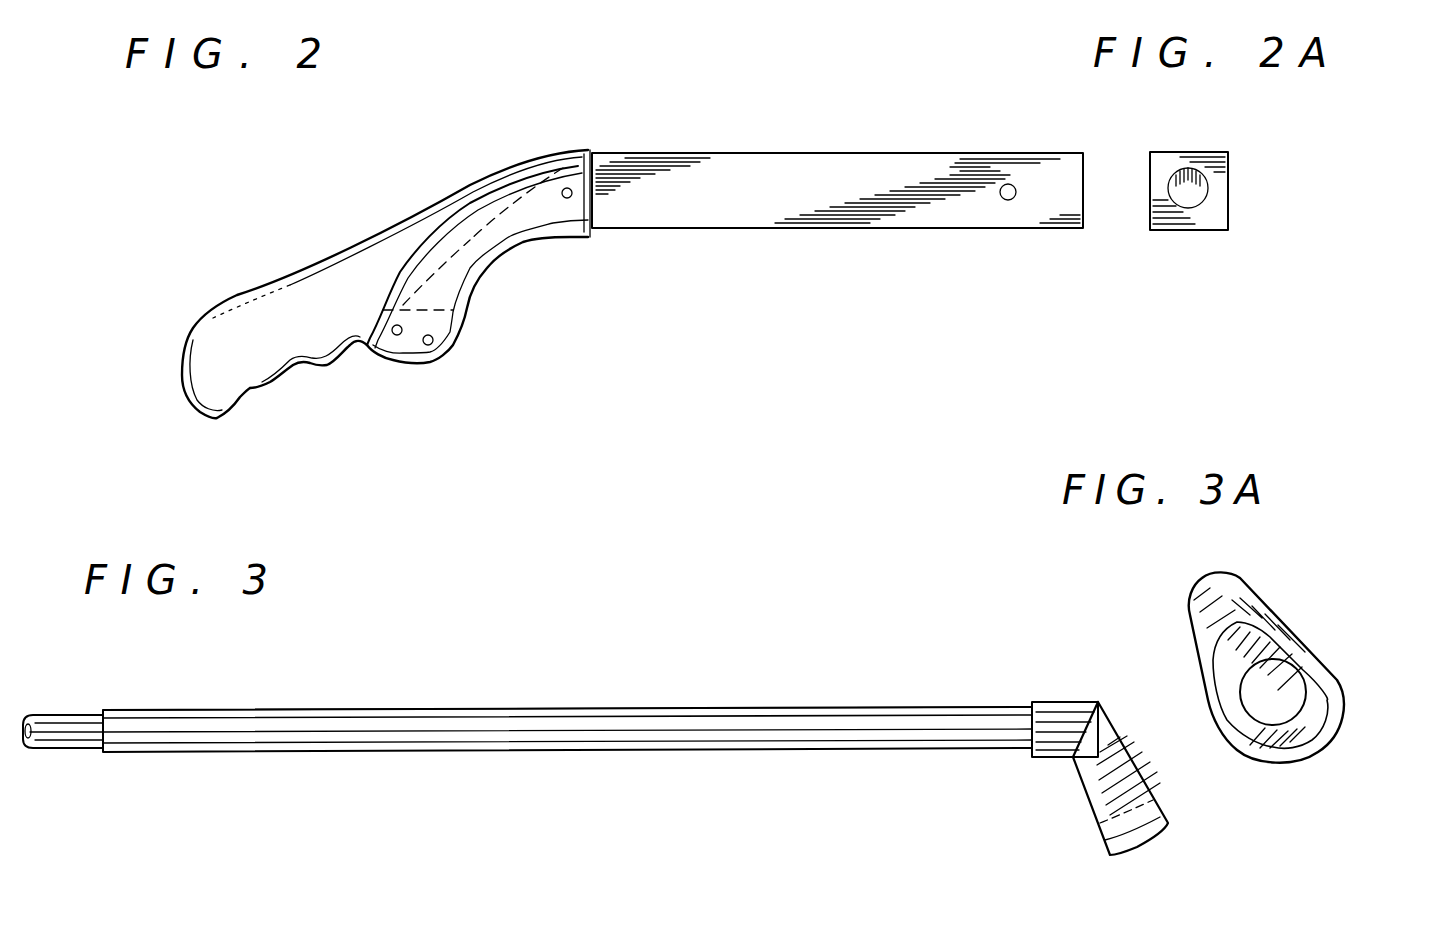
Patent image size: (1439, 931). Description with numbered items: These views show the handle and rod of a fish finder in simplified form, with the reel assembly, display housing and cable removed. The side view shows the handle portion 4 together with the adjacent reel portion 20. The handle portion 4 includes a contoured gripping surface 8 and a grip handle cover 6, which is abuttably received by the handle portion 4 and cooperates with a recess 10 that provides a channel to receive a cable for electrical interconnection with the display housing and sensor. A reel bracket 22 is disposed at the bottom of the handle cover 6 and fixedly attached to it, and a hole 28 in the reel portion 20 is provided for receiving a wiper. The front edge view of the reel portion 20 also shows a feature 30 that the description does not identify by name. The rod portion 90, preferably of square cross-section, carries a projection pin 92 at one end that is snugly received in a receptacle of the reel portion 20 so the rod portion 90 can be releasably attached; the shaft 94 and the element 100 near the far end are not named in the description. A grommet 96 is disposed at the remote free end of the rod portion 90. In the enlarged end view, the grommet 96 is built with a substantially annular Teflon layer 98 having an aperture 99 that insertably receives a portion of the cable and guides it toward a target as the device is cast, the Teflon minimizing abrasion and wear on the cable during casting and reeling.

In FIG. 2, the handle portion 4 is at (273, 282).
In FIG. 2, the grip handle cover 6 is at (493, 268).
In FIG. 2, the gripping surface 8 is at (280, 388).
In FIG. 2, the recess 10 is at (513, 212).
In FIG. 2, the reel portion 20 is at (825, 152).
In FIG. 2A, the reel portion 20 is at (1228, 160).
In FIG. 2, the reel bracket 22 is at (403, 352).
In FIG. 2, the hole 28 is at (1003, 200).
In FIG. 2A, the bore 30 is at (1195, 200).
In FIG. 3, the rod portion 90 is at (585, 763).
In FIG. 3, the projection pin 92 is at (68, 713).
In FIG. 3, the shaft 94 is at (538, 710).
In FIG. 3, the grommet 96 is at (1130, 742).
In FIG. 3A, the grommet 96 is at (1280, 622).
In FIG. 3A, the Teflon layer 98 is at (1313, 678).
In FIG. 3A, the aperture 99 is at (1280, 710).
In FIG. 3, the collar 100 is at (1030, 702).